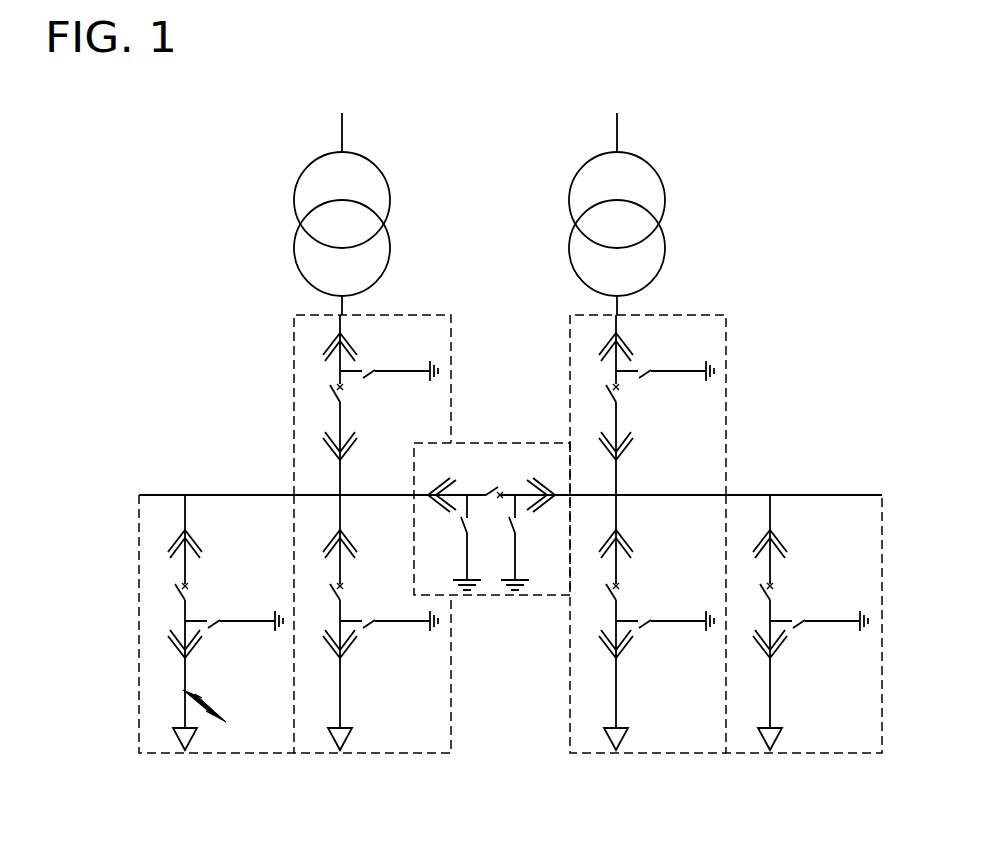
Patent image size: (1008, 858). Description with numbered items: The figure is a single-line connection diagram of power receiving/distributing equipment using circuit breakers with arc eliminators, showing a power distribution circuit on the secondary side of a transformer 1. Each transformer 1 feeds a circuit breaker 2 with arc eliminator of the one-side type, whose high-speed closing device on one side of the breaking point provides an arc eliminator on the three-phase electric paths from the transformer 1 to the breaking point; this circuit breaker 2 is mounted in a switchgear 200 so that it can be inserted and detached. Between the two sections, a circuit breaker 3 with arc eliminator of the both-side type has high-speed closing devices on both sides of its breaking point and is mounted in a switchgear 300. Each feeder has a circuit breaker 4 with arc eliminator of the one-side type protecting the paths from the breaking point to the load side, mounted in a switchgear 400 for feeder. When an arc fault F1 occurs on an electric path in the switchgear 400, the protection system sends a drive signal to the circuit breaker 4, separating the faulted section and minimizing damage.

The transformer 1 is at (389, 206).
The circuit breaker with arc eliminator (one-side type) 2 is at (338, 423).
The circuit breaker with arc eliminator (both-side type) 3 is at (489, 487).
The circuit breaker with arc eliminator (one-side type) 4 is at (183, 596).
The switchgear 200 is at (446, 313).
The switchgear 300 is at (478, 443).
The switchgear for feeder 400 is at (200, 755).
The arc fault F1 is at (221, 714).